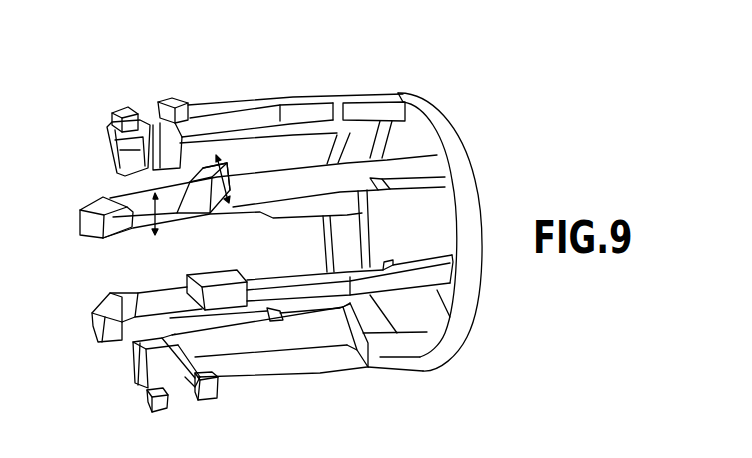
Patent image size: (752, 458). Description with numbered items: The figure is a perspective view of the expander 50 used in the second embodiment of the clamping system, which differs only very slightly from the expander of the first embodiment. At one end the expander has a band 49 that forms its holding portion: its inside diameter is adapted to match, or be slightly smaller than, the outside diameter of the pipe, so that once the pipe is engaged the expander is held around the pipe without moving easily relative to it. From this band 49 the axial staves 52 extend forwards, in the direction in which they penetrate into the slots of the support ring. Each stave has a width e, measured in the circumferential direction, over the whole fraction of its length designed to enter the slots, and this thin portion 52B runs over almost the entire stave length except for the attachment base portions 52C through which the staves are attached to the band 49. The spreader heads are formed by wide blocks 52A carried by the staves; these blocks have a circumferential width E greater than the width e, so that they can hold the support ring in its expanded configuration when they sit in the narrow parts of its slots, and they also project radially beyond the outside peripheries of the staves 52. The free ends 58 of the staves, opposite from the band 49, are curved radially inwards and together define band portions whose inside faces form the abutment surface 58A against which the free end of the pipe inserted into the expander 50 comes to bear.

The band 49 is at (468, 183).
The expander 50 is at (479, 114).
The axial staves 52 is at (240, 92).
The blocks 52A is at (175, 98).
The thin portion 52B is at (283, 100).
The attachment base portions 52C is at (359, 99).
The free ends 58 is at (128, 160).
The abutment surface 58A is at (262, 186).
The width of the blocks E is at (232, 184).
The width of the staves e is at (145, 212).